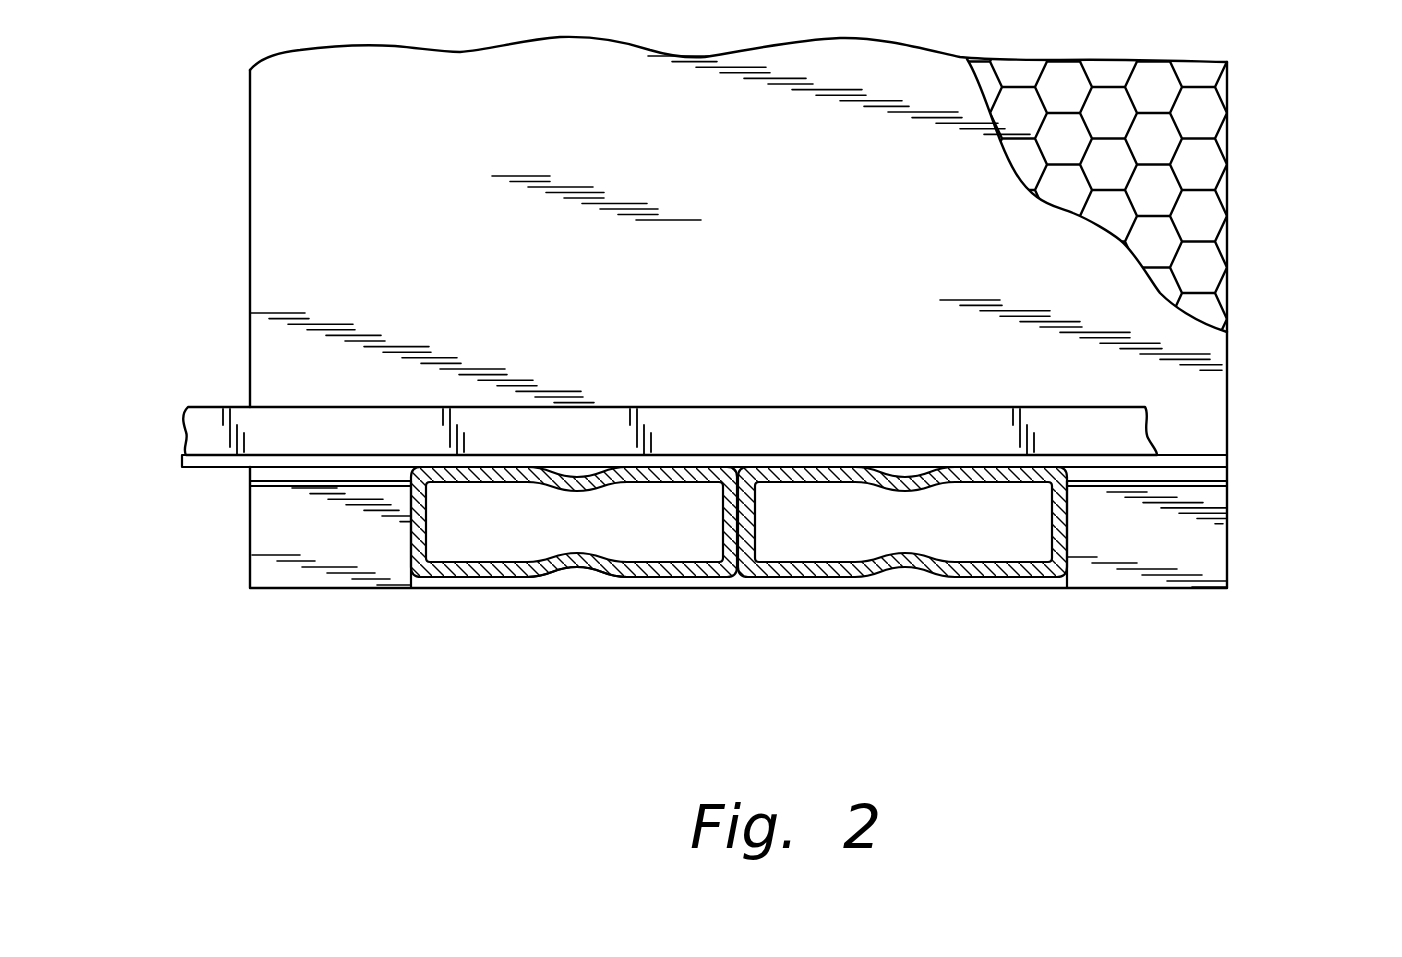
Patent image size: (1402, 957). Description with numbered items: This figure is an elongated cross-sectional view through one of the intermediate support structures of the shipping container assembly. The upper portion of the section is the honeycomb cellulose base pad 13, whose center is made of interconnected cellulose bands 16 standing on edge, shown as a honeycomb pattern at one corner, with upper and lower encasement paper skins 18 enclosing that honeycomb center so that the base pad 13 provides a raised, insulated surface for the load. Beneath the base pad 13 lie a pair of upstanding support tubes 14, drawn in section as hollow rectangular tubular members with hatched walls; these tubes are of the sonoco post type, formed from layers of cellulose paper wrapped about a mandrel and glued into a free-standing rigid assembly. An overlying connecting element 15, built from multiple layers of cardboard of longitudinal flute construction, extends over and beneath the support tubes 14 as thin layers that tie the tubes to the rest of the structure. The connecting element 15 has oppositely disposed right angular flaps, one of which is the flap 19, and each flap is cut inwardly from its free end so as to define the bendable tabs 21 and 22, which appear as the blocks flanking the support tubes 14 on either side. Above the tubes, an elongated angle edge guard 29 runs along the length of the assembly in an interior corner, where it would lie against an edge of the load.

The honeycomb cellulose base pad 13 is at (1229, 304).
The upstanding support tube 14 is at (700, 567).
The overlying connecting element 15 is at (1212, 474).
The interconnected cellulose bands 16 is at (1177, 176).
The encasement paper skin 18 is at (1088, 295).
The right angular flap 19 is at (552, 580).
The bendable tab 21 is at (1167, 547).
The bendable tab 22 is at (321, 563).
The elongated angle edge guard 29 is at (413, 426).